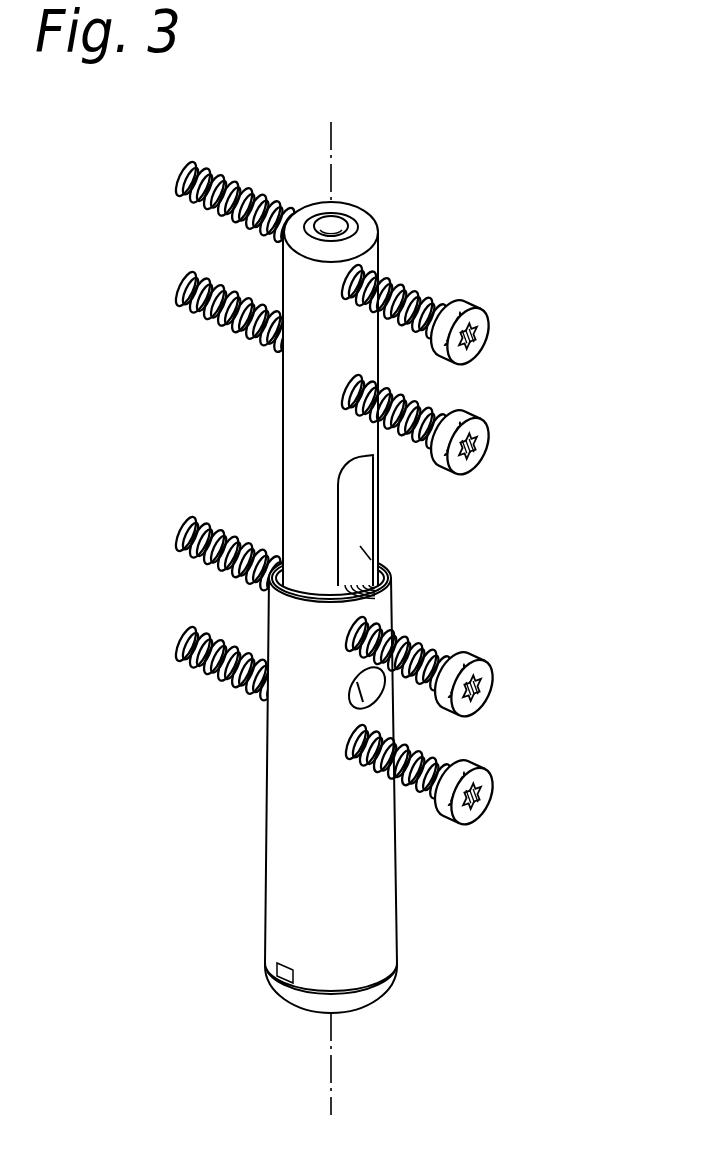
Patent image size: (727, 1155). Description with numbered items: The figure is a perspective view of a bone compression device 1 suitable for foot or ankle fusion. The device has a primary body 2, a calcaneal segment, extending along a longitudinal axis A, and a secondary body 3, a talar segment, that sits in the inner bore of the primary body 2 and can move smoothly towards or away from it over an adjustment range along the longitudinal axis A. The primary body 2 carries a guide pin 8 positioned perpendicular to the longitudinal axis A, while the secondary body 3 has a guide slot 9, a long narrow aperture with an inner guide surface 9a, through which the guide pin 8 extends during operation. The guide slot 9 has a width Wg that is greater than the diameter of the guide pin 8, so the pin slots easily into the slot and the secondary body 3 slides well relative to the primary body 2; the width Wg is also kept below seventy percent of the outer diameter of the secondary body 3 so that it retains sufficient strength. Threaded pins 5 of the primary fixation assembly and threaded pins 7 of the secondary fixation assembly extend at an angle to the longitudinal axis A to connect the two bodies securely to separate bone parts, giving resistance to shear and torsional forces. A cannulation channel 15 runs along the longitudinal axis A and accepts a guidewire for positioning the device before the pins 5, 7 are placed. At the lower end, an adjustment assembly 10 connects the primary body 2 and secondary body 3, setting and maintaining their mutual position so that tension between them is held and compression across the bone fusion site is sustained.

The bone compression device 1 is at (380, 565).
The primary body 2 is at (290, 875).
The secondary body 3 is at (299, 447).
The pins 5 is at (464, 760).
The pins 7 is at (464, 405).
The guide pin 8 is at (368, 706).
The guide slot 9 is at (502, 549).
The inner guide surface 9a is at (387, 570).
The adjustment assembly 10 is at (363, 1000).
The cannulation channel 15 is at (342, 228).
The longitudinal axis A is at (330, 130).
The width of the guide slot Wg is at (307, 552).